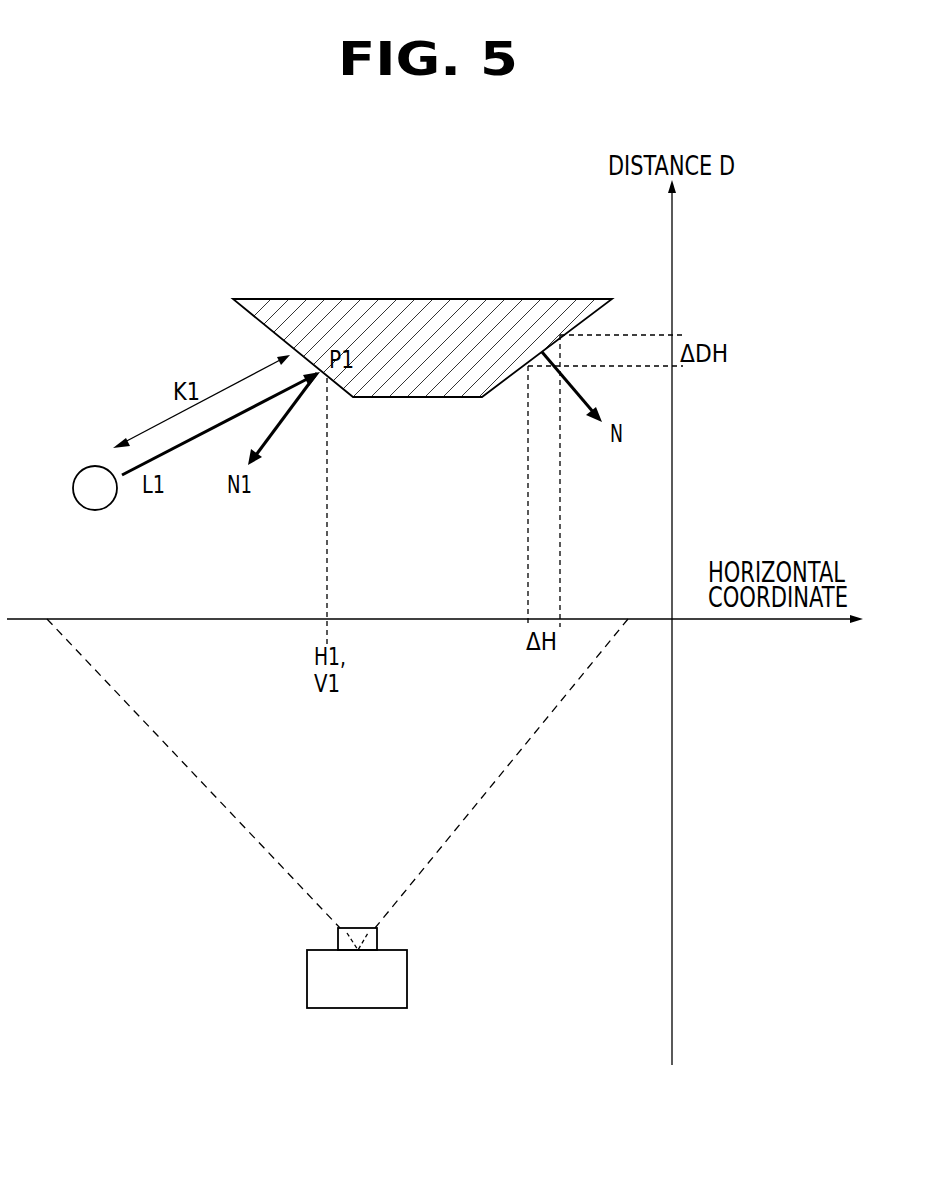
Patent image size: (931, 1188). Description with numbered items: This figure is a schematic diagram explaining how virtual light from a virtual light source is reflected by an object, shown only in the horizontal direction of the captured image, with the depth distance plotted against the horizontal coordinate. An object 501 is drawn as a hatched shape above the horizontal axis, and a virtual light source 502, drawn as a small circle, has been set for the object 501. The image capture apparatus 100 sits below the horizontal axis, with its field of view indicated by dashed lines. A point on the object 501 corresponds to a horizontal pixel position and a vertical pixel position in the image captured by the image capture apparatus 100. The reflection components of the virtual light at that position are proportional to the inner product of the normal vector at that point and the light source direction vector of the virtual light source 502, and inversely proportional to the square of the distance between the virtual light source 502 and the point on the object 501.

The object 501 is at (447, 298).
The virtual light source 502 is at (83, 467).
The image capture apparatus 100 is at (408, 968).